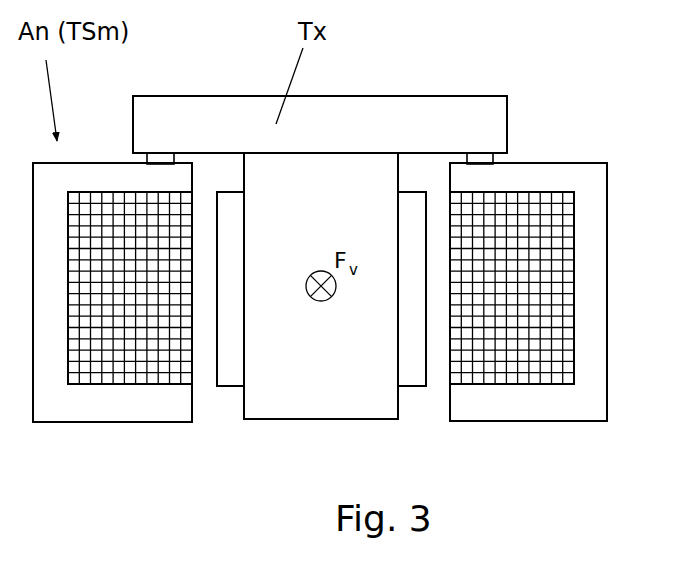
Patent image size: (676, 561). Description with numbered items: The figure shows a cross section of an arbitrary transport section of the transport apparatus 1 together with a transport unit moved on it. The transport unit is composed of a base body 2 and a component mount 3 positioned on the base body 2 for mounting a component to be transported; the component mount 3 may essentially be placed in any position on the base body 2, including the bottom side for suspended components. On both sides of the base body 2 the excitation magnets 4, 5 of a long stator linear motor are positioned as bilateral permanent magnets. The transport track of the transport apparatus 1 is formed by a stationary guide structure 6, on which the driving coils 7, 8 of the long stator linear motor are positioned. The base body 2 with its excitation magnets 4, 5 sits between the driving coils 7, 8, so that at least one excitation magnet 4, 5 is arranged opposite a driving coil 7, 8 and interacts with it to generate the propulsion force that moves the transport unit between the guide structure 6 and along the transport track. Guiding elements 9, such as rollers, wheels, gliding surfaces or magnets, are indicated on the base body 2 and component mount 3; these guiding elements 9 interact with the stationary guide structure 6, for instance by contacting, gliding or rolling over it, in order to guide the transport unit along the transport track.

The transport apparatus 1 is at (583, 103).
The base body 2 is at (322, 373).
The component mount 3 is at (373, 124).
The excitation magnet 4 is at (237, 355).
The excitation magnet 5 is at (414, 362).
The guide structure 6 is at (52, 378).
The driving coil 7 is at (110, 340).
The driving coil 8 is at (495, 347).
The guiding element 9 is at (160, 151).